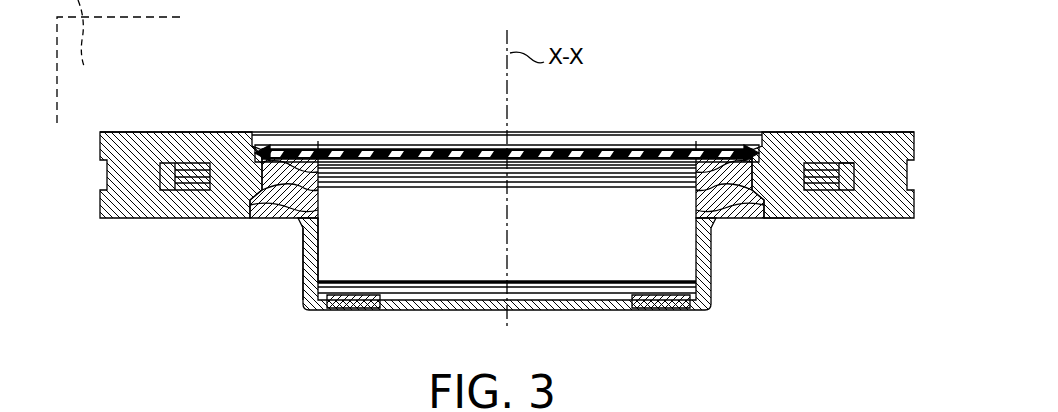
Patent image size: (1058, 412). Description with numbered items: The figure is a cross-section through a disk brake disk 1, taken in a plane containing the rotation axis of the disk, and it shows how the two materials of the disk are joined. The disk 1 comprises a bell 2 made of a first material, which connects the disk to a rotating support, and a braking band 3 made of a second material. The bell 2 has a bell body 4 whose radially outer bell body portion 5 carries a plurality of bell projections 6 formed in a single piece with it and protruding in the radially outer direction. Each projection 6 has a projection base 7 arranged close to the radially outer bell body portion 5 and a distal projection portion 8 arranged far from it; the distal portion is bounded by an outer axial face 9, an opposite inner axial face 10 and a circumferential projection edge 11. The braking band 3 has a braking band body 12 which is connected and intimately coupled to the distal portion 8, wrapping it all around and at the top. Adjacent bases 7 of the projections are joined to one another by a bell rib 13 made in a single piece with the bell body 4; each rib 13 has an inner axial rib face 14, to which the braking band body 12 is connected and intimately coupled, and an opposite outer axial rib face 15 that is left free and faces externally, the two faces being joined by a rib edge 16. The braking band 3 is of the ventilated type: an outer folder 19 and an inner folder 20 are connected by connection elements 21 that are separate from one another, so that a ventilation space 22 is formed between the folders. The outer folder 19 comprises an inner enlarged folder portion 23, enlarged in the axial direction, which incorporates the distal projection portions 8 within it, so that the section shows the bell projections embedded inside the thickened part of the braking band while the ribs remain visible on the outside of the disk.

The disk brake disk 1 is at (200, 307).
The bell 2 is at (708, 307).
The braking band 3 is at (882, 218).
The bell body 4 is at (303, 263).
The radially outer bell body portion 5 is at (322, 227).
The bell projection 6 is at (278, 217).
The projection base 7 is at (318, 178).
The distal projection portion 8 is at (260, 148).
The outer axial face 9 is at (280, 198).
The inner axial face 10 is at (250, 146).
The circumferential projection edge 11 is at (247, 195).
The braking band body 12 is at (247, 197).
The bell rib 13 is at (720, 220).
The inner axial rib face 14 is at (733, 147).
The outer axial rib face 15 is at (733, 218).
The rib edge 16 is at (792, 218).
The outer folder 19 is at (840, 160).
The inner folder 20 is at (828, 218).
The connection element 21 is at (130, 157).
The ventilation space 22 is at (168, 192).
The inner enlarged folder portion 23 is at (272, 146).